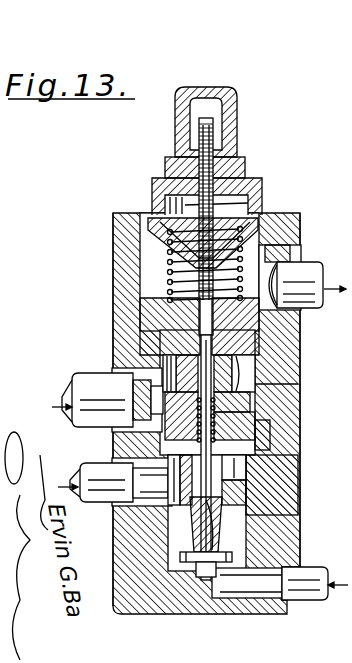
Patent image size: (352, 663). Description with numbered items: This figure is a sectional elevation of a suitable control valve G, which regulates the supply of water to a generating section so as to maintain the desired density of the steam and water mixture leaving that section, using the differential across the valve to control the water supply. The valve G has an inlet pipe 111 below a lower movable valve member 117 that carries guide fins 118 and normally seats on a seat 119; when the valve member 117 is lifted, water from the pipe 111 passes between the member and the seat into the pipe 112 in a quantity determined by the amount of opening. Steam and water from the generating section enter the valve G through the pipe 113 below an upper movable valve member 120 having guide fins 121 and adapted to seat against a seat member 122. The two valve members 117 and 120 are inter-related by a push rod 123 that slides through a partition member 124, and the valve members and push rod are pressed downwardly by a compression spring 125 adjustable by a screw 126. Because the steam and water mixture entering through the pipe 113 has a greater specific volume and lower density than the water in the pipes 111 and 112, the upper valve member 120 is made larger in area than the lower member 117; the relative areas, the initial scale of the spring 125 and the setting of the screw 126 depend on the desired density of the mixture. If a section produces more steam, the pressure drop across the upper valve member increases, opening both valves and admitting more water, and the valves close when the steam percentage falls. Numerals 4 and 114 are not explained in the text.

The valve body 4 is at (351, 413).
The inlet pipe 111 is at (303, 602).
The pipe 112 is at (96, 470).
The pipe 113 is at (96, 382).
The port fitting 114 is at (330, 243).
The movable valve member 117 is at (268, 499).
The guide fins 118 is at (188, 556).
The seat 119 is at (183, 528).
The movable valve member 120 is at (142, 298).
The guide fins 121 is at (238, 399).
The seat member 122 is at (280, 326).
The push rod 123 is at (244, 481).
The partition member 124 is at (283, 434).
The compression spring 125 is at (166, 272).
The screw 126 is at (263, 191).
The control valve G is at (288, 389).